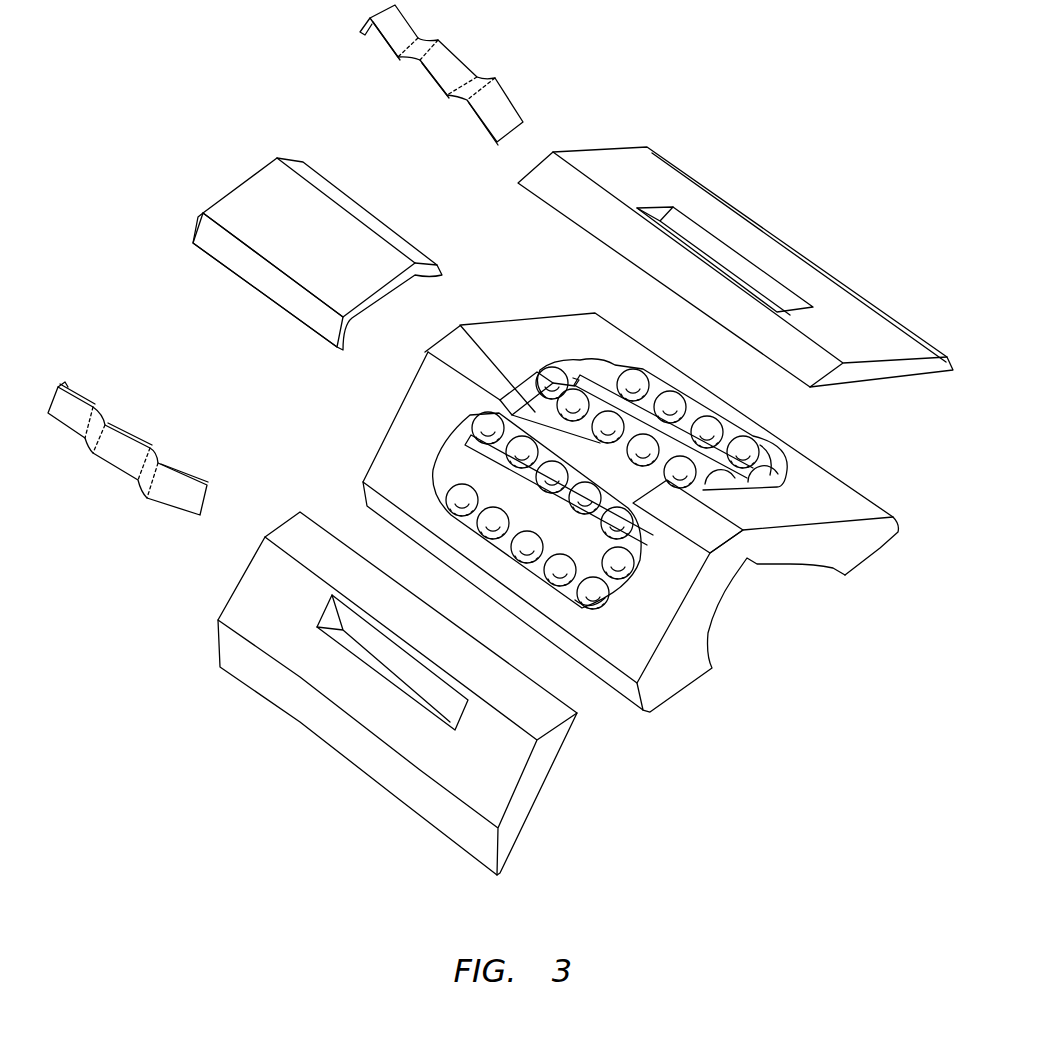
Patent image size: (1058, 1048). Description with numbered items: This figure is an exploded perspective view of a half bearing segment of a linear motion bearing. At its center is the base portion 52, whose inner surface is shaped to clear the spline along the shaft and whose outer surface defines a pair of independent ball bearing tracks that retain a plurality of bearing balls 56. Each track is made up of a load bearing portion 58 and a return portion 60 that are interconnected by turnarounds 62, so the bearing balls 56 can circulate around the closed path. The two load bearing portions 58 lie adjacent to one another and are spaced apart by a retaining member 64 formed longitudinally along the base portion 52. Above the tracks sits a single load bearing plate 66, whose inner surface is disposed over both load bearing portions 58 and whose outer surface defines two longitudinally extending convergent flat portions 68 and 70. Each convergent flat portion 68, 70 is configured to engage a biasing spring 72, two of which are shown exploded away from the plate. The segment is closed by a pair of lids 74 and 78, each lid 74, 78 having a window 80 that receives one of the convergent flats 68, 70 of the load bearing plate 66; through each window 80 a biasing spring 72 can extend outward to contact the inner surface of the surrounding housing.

The base portion 52 is at (827, 553).
The bearing balls 56 is at (508, 395).
The load bearing portion 58 is at (547, 377).
The return portion 60 is at (768, 458).
The turnarounds 62 is at (608, 362).
The retaining member 64 is at (625, 485).
The load bearing plate 66 is at (310, 237).
The convergent flat portion 68 is at (322, 182).
The convergent flat portion 70 is at (253, 275).
The biasing spring 72 is at (500, 105).
The lid 74 is at (635, 442).
The lid 78 is at (245, 608).
The window 80 is at (710, 243).